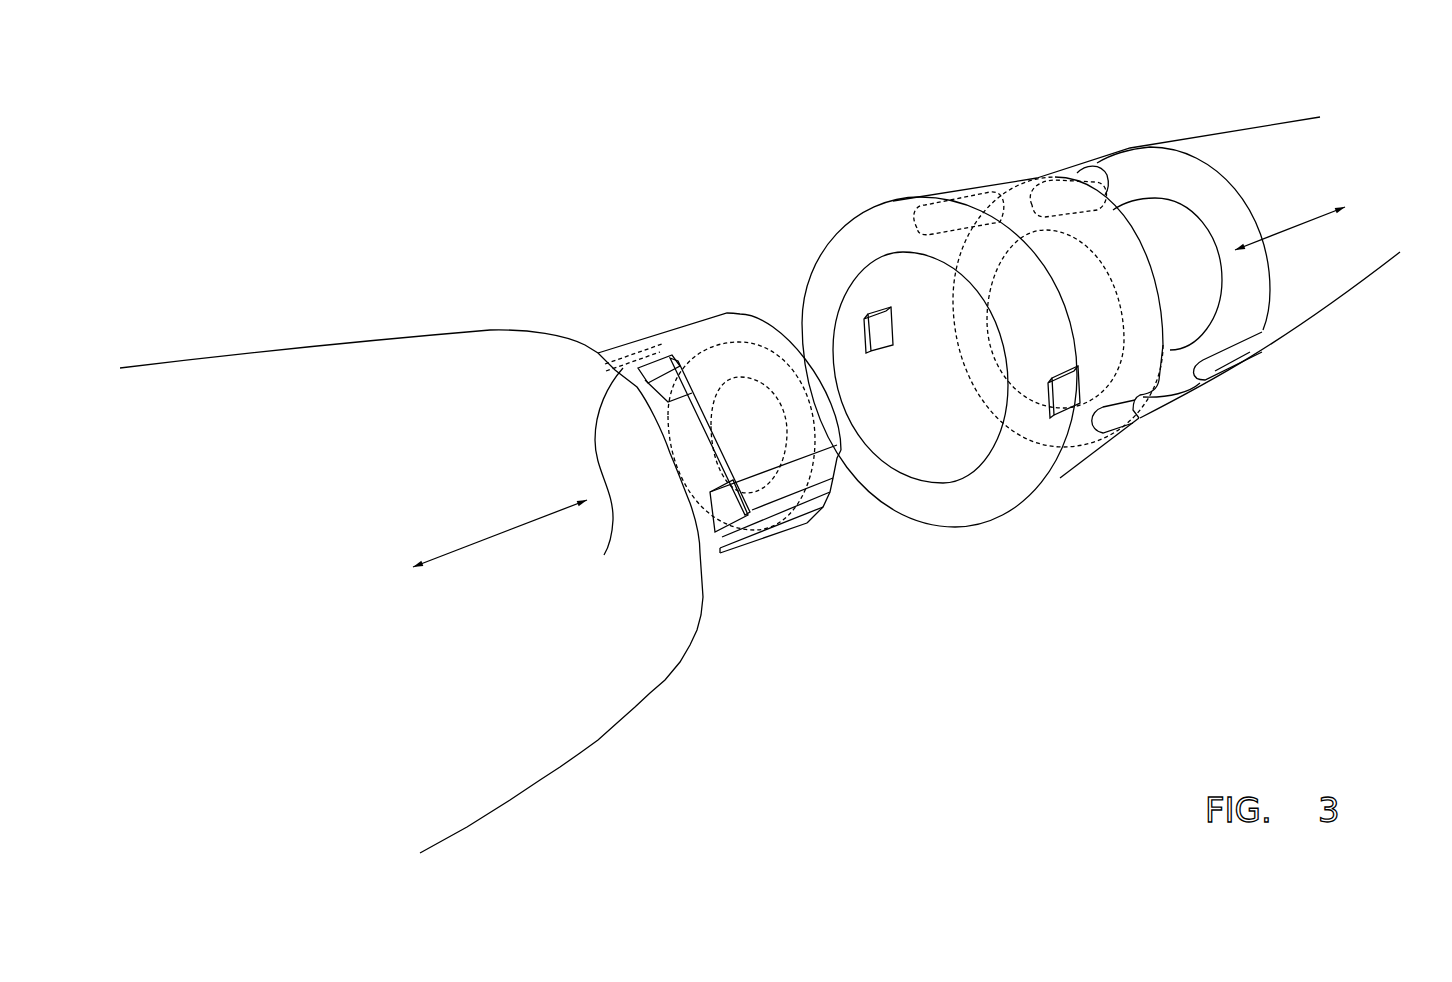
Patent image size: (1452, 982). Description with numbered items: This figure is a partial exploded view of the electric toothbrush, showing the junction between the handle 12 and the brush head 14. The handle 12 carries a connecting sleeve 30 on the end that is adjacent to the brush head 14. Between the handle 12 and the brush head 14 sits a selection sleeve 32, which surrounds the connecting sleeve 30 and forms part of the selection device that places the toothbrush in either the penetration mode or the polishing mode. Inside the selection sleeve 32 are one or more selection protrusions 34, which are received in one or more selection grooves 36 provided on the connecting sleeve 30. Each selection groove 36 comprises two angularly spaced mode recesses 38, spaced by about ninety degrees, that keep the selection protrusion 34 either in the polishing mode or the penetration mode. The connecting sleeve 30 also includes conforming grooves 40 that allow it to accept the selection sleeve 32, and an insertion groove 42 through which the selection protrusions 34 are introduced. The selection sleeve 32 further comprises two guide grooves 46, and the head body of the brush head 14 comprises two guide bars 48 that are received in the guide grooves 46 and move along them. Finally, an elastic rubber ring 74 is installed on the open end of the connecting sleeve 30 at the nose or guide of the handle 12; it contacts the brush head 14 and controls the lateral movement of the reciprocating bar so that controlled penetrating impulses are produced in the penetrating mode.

The handle 12 is at (682, 667).
The brush head 14 is at (1343, 312).
The connecting sleeve 30 is at (660, 318).
The selection sleeve 32 is at (1085, 472).
The selection protrusions 34 is at (1053, 417).
The selection grooves 36 is at (655, 387).
The mode recesses 38 is at (674, 388).
The conforming grooves 40 is at (715, 550).
The insertion groove 42 is at (828, 465).
The guide grooves 46 is at (920, 205).
The guide bars 48 is at (1090, 185).
The elastic rubber ring 74 is at (750, 350).